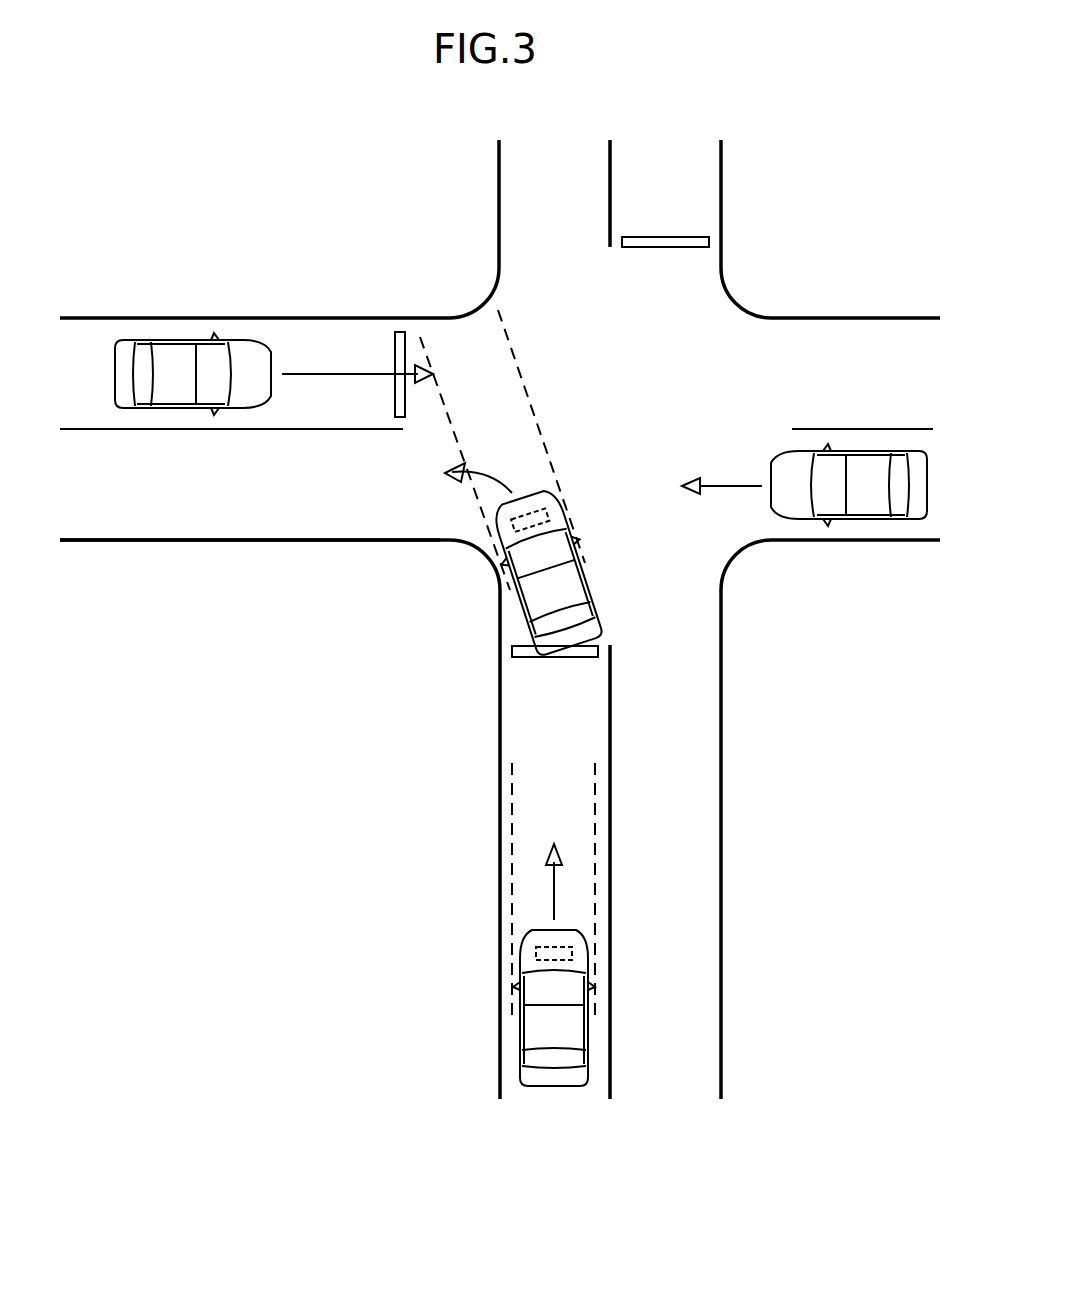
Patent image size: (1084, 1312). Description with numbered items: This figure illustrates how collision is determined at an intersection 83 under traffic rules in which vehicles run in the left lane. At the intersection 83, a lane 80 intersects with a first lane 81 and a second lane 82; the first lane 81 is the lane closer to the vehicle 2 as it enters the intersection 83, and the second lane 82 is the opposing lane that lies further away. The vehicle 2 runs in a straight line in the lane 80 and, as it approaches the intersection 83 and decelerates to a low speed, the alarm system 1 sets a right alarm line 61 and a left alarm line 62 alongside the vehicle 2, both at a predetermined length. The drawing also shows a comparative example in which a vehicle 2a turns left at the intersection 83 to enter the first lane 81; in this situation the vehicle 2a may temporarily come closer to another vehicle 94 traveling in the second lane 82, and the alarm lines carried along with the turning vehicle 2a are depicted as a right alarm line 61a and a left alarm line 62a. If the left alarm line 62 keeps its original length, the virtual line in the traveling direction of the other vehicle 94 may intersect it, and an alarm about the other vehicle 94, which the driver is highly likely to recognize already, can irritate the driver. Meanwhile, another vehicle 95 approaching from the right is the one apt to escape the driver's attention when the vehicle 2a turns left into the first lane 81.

The alarm system 1 is at (530, 956).
The vehicle 2 is at (525, 1055).
The vehicle 2a is at (523, 603).
The right alarm line 61 is at (596, 837).
The extended lane boundary line 61a is at (544, 423).
The left alarm line 62 is at (512, 838).
The extended lane boundary line 62a is at (449, 425).
The lane 80 is at (553, 1098).
The first lane 81 is at (80, 497).
The second lane 82 is at (79, 361).
The intersection 83 is at (642, 413).
The other vehicle 94 is at (168, 342).
The other vehicle 95 is at (871, 520).